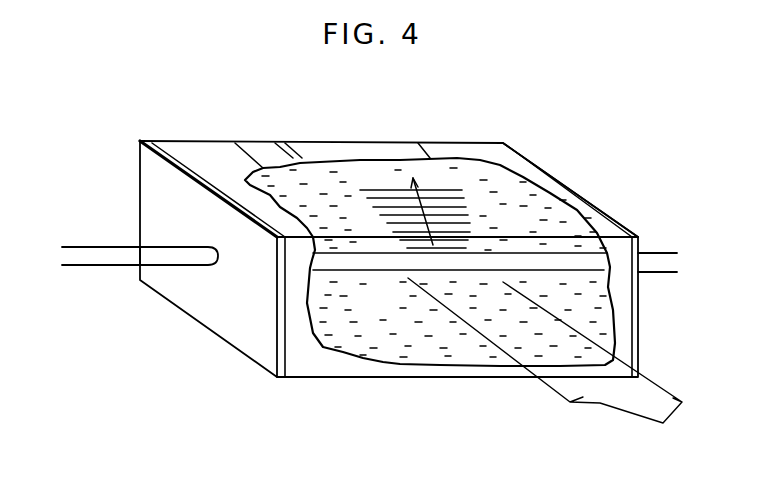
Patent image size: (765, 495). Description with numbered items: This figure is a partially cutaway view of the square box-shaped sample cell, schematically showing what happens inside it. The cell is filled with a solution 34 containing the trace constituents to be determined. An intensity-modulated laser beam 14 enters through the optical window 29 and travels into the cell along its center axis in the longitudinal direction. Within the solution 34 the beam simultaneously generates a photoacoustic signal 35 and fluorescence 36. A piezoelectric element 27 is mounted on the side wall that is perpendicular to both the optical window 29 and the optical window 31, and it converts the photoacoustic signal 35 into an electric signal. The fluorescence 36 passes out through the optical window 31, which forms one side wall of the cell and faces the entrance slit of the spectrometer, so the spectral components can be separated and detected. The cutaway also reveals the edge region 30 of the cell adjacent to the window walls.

The intensity-modulated laser beam 14 is at (87, 246).
The piezoelectric element 27 is at (335, 141).
The optical window 29 is at (148, 138).
The right seam 30 is at (528, 158).
The optical window 31 is at (320, 371).
The solution 34 is at (393, 358).
The photoacoustic signal 35 is at (381, 215).
The fluorescence 36 is at (598, 404).